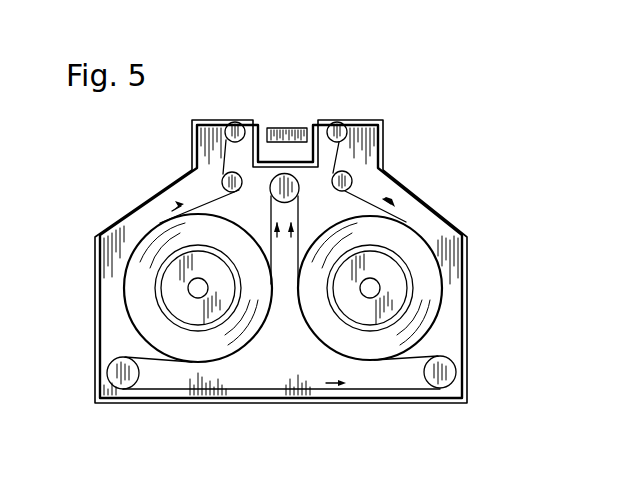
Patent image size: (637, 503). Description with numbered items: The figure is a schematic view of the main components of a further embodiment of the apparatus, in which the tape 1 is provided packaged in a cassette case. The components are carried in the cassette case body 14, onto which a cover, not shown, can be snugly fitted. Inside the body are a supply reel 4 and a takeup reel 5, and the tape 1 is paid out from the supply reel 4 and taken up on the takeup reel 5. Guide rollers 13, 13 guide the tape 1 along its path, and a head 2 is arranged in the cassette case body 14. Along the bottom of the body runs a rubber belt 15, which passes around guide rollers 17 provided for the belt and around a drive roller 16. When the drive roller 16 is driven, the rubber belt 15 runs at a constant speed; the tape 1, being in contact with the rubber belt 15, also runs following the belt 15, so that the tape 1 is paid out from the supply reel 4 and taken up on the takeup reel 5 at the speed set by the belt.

The tape 1 is at (344, 150).
The head 2 is at (288, 132).
The supply reel 4 is at (172, 292).
The takeup reel 5 is at (392, 283).
The guide rollers 13 is at (221, 180).
The cassette case body 14 is at (466, 338).
The rubber belt 15 is at (268, 388).
The drive roller 16 is at (234, 194).
The guide rollers for rubber belt 17 is at (124, 390).